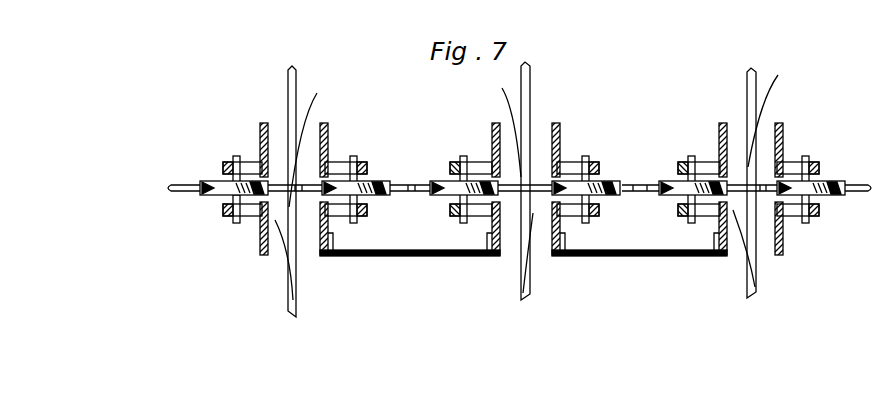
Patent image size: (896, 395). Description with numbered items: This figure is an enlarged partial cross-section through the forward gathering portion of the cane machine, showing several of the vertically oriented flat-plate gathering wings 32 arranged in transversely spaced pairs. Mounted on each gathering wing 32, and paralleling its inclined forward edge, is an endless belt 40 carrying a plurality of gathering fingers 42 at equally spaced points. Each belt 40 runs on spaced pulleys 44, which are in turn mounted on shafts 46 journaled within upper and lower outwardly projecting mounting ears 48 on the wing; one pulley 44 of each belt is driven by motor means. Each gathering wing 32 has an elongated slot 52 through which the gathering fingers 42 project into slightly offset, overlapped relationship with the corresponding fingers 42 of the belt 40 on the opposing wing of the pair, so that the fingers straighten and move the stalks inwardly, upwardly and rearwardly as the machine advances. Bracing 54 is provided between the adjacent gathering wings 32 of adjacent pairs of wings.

The gathering wing 32 is at (336, 129).
The endless belt 40 is at (201, 193).
The gathering finger 42 is at (200, 184).
The pulley 44 is at (216, 197).
The shaft 46 is at (234, 218).
The mounting ear 48 is at (240, 156).
The elongated slot 52 is at (323, 192).
The bracing 54 is at (412, 253).